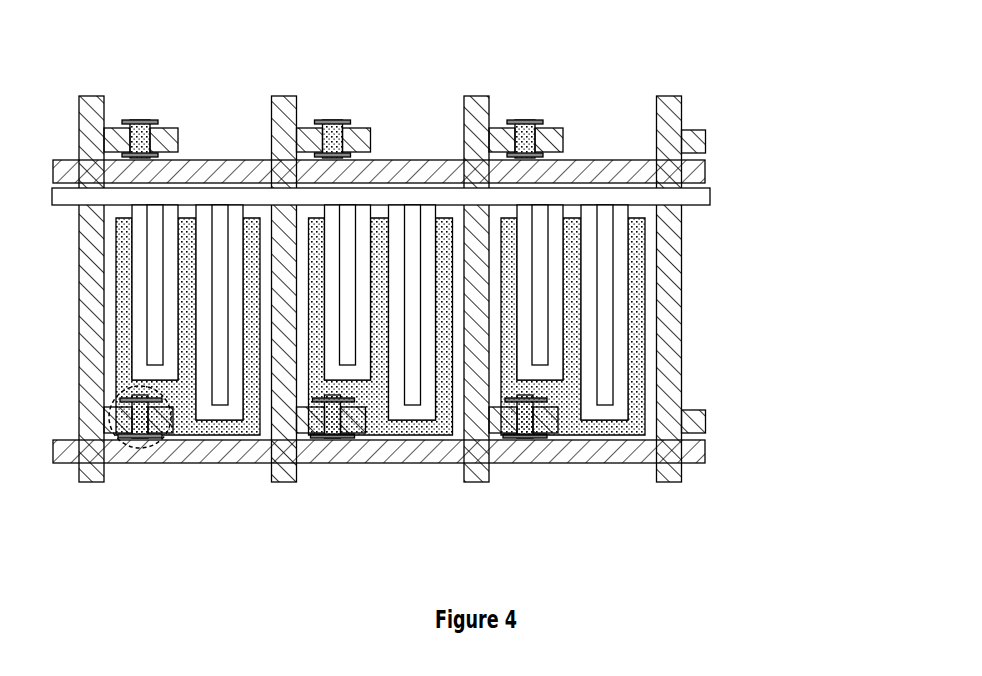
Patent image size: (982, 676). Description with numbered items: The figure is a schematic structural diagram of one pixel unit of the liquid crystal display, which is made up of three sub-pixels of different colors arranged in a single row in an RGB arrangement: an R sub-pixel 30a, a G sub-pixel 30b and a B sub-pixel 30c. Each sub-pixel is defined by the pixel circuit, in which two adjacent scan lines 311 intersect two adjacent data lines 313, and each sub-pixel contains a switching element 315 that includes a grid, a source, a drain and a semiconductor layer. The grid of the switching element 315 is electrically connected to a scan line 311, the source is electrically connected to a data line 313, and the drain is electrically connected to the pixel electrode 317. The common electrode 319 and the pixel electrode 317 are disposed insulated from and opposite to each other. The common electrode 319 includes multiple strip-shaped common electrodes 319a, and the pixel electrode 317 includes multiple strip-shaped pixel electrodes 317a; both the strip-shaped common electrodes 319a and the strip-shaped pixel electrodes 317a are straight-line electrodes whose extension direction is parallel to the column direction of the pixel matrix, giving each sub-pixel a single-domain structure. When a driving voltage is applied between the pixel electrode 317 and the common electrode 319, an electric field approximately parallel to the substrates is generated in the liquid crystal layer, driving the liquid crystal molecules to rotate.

The R sub-pixel 30a is at (218, 132).
The G sub-pixel 30b is at (415, 132).
The B sub-pixel 30c is at (612, 132).
The scan line 311 is at (690, 450).
The data line 313 is at (683, 143).
The switching element 315 is at (153, 450).
The pixel electrode 317 is at (439, 363).
The strip-shaped pixel electrode 317a is at (635, 315).
The common electrode 319 is at (692, 198).
The strip-shaped common electrode 319a is at (602, 255).